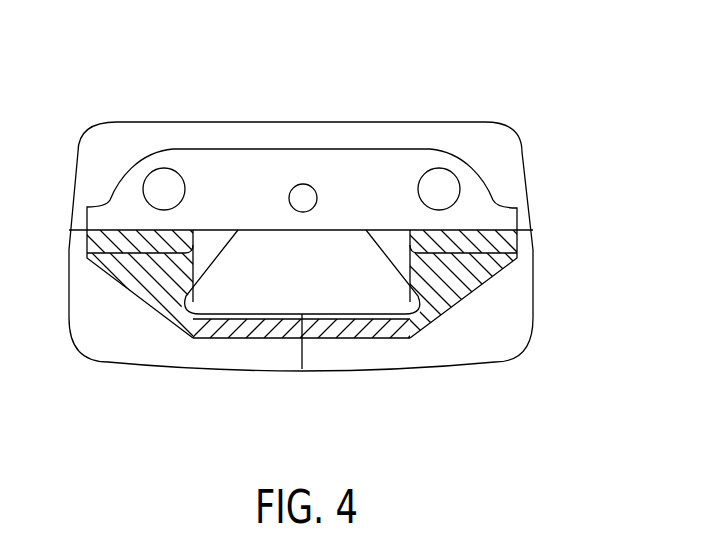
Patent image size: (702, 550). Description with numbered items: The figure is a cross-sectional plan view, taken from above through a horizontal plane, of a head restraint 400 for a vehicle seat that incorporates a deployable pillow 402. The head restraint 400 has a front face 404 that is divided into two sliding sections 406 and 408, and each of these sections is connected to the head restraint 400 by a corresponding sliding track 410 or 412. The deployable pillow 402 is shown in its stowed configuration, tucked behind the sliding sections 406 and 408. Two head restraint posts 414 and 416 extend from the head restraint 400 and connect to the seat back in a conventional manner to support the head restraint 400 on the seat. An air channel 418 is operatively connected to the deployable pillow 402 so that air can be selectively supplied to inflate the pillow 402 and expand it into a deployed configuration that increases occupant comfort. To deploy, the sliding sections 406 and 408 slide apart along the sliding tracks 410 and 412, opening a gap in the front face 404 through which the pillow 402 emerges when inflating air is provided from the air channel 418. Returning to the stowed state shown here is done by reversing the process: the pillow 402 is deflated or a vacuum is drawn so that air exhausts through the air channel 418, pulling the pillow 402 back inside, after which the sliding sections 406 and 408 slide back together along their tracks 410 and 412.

The head restraint 400 is at (496, 79).
The deployable pillow 402 is at (320, 252).
The front face 404 is at (412, 396).
The sliding section 406 is at (120, 340).
The sliding section 408 is at (505, 340).
The sliding track 410 is at (112, 253).
The sliding track 412 is at (495, 253).
The head restraint post 414 is at (167, 168).
The head restraint post 416 is at (437, 168).
The air channel 418 is at (305, 184).